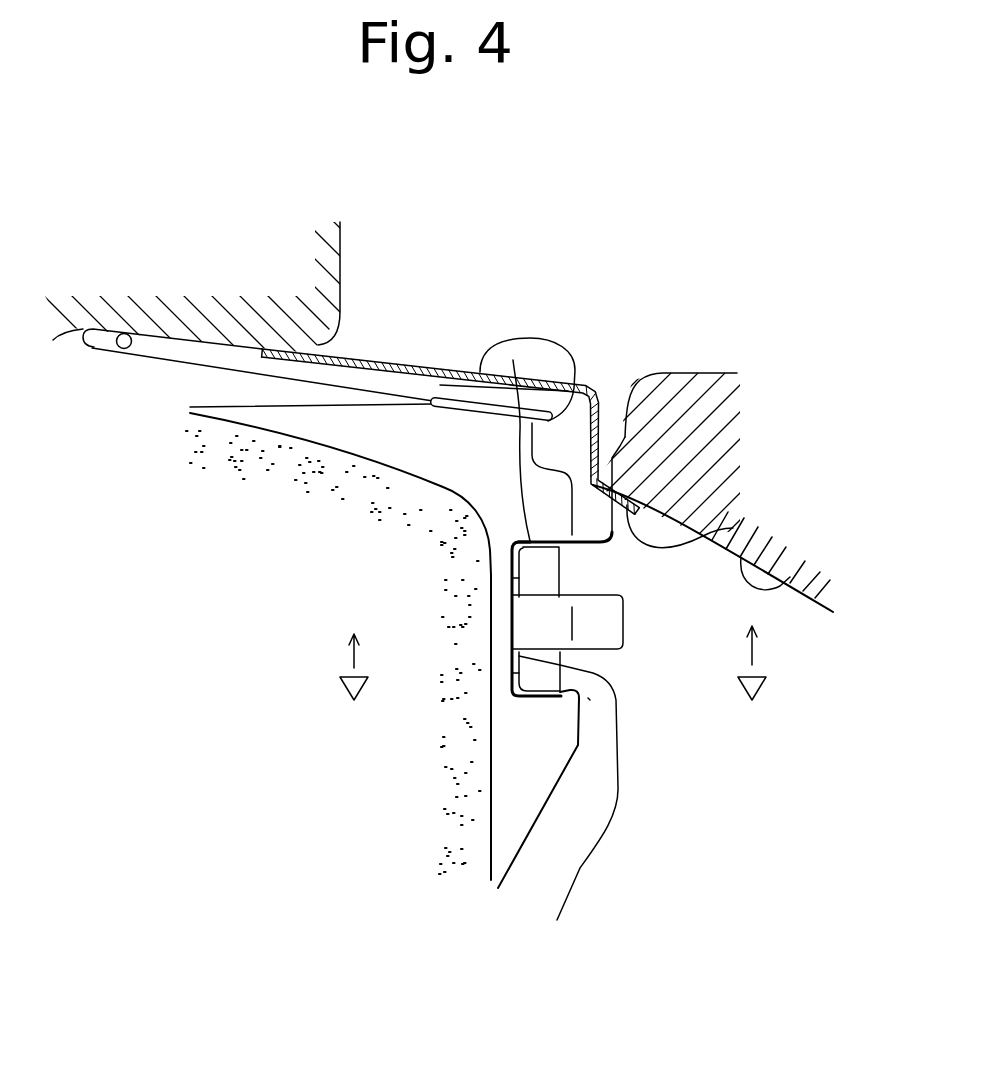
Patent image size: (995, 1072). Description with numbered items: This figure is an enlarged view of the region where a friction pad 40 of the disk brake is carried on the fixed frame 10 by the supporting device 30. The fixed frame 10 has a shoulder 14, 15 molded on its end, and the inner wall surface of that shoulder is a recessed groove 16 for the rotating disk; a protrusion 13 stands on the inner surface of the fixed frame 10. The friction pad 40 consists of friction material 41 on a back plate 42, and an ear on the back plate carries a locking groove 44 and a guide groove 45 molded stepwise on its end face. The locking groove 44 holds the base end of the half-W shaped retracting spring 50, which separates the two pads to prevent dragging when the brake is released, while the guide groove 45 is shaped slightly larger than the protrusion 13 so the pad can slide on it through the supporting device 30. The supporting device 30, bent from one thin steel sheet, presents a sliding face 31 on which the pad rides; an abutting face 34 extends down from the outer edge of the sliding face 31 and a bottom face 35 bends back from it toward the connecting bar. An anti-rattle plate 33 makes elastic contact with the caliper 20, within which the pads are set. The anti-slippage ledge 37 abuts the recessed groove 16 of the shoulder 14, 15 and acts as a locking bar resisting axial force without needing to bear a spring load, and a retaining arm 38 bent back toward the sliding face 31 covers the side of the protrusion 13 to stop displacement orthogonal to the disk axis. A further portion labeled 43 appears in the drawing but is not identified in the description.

The fixed frame 10 is at (648, 421).
The protrusion 13 is at (516, 619).
The shoulder 14 is at (648, 473).
The shoulder 15 is at (699, 367).
The recessed groove 16 is at (790, 580).
The caliper 20 is at (343, 246).
The supporting device 30 is at (440, 601).
The sliding face 31 is at (522, 416).
The anti-rattle plate 33 is at (400, 352).
The abutting face 34 is at (516, 578).
The bottom face 35 is at (516, 673).
The anti-slippage ledge 37 is at (733, 528).
The retaining arm 38 is at (610, 630).
The friction pad 40 is at (522, 875).
The friction material 41 is at (472, 810).
The back plate 42 is at (537, 773).
The hollow seal portion 43 is at (512, 354).
The locking groove 44 is at (532, 440).
The guide groove 45 is at (588, 698).
The retracting spring 50 is at (300, 642).